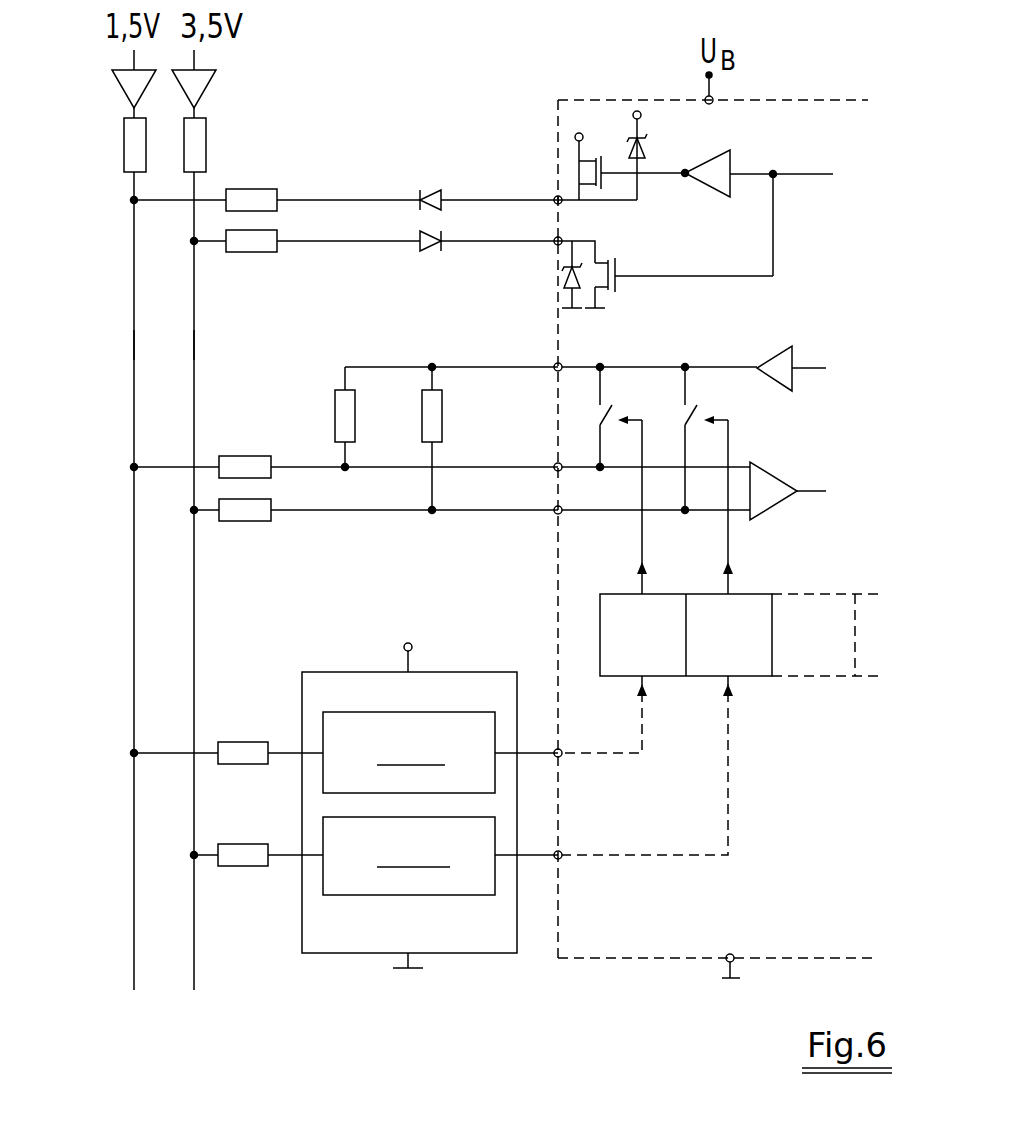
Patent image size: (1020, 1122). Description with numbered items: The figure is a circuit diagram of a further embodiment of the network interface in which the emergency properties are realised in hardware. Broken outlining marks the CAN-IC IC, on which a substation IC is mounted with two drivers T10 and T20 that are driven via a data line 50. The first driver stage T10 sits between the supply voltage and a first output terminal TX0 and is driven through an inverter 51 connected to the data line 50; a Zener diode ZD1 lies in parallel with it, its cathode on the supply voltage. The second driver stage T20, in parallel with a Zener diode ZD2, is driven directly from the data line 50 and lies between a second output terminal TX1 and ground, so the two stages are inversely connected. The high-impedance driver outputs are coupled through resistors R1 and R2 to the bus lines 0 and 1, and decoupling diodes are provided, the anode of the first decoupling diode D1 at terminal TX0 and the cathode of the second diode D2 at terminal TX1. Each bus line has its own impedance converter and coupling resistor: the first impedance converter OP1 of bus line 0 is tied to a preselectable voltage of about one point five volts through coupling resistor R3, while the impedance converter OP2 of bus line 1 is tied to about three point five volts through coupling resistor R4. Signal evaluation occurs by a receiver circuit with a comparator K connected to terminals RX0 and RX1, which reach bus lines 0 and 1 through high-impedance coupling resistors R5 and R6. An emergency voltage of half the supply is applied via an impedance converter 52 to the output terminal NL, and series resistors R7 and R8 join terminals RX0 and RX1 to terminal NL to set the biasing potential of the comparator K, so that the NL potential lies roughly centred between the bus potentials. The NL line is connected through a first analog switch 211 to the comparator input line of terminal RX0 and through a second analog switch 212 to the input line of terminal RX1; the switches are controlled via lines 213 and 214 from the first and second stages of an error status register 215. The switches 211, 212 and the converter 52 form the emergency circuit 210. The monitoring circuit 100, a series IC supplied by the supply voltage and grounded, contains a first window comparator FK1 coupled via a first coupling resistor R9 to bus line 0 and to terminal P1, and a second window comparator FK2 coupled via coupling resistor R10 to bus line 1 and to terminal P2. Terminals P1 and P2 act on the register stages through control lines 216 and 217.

The data line 50 is at (777, 172).
The inverter 51 is at (716, 150).
The impedance converter 52 is at (780, 348).
The monitoring circuit 100 is at (414, 779).
The emergency circuit 210 is at (645, 437).
The first analog switch 211 is at (596, 418).
The second analog switch 212 is at (705, 407).
The line 213 is at (640, 550).
The line 214 is at (732, 552).
The error status register 215 is at (775, 678).
The control line 216 is at (640, 712).
The control line 217 is at (726, 712).
The resistor R1 is at (262, 200).
The resistor R2 is at (240, 251).
The coupling resistor R3 is at (124, 140).
The coupling resistor R4 is at (206, 140).
The coupling resistor R5 is at (256, 424).
The coupling resistor R6 is at (250, 521).
The series resistor R7 is at (337, 420).
The series resistor R8 is at (425, 420).
The first coupling resistor R9 is at (256, 745).
The coupling resistor R10 is at (266, 876).
The first decoupling diode D1 is at (426, 192).
The second decoupling diode D2 is at (428, 252).
The Zener diode ZD1 is at (628, 130).
The Zener diode ZD2 is at (565, 300).
The first driver stage T10 is at (580, 158).
The second driver stage T20 is at (616, 286).
The first impedance converter OP1 is at (118, 85).
The impedance converter OP2 is at (206, 92).
The comparator K is at (772, 485).
The first window comparator FK1 is at (440, 752).
The second window comparator FK2 is at (440, 856).
The terminal P1 is at (562, 758).
The terminal P2 is at (562, 850).
The first output terminal TX0 is at (556, 196).
The second output terminal TX1 is at (556, 246).
The connection terminal RX0 is at (556, 463).
The connection terminal RX1 is at (556, 515).
The output terminal NL is at (554, 364).
The CAN- IC is at (717, 539).
The bus line 0 is at (134, 349).
The bus line 1 is at (216, 318).